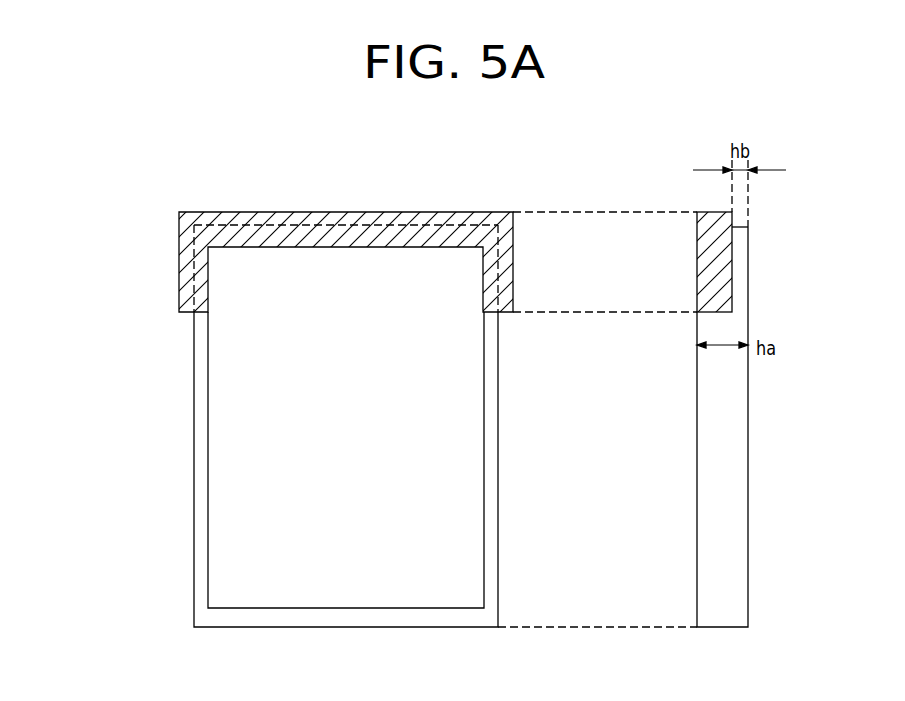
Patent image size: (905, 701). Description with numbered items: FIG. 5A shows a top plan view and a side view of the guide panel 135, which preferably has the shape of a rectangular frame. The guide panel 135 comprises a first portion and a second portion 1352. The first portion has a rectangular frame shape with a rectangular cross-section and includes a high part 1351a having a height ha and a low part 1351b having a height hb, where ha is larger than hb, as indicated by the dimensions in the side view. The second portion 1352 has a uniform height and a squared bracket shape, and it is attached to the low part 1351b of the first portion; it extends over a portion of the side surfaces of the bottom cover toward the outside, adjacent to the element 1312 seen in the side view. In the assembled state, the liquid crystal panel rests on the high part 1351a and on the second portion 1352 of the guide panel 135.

The guide panel 135 is at (88, 225).
The second portion 1352 is at (180, 244).
The low part 1351b is at (182, 291).
The high part 1351a is at (202, 336).
The protrusion 1312 is at (720, 241).